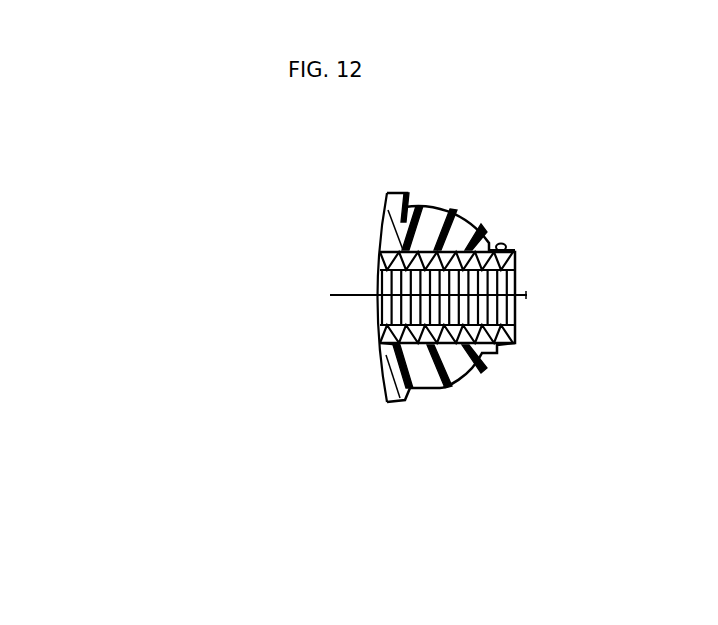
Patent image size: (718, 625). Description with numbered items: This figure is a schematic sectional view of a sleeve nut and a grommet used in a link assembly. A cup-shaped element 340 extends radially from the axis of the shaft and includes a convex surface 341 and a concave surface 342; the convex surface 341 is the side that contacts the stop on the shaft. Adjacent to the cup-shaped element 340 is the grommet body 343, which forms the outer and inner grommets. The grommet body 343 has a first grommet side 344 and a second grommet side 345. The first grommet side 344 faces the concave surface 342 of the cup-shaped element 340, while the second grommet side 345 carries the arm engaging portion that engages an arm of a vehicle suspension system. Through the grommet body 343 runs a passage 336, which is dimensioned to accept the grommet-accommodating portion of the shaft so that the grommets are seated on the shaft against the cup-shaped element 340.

The passage 336 is at (467, 248).
The cup-shaped element 340 is at (383, 380).
The convex surface 341 is at (380, 256).
The concave surface 342 is at (407, 197).
The grommet body 343 is at (437, 370).
The first grommet side 344 is at (400, 352).
The second grommet side 345 is at (506, 246).